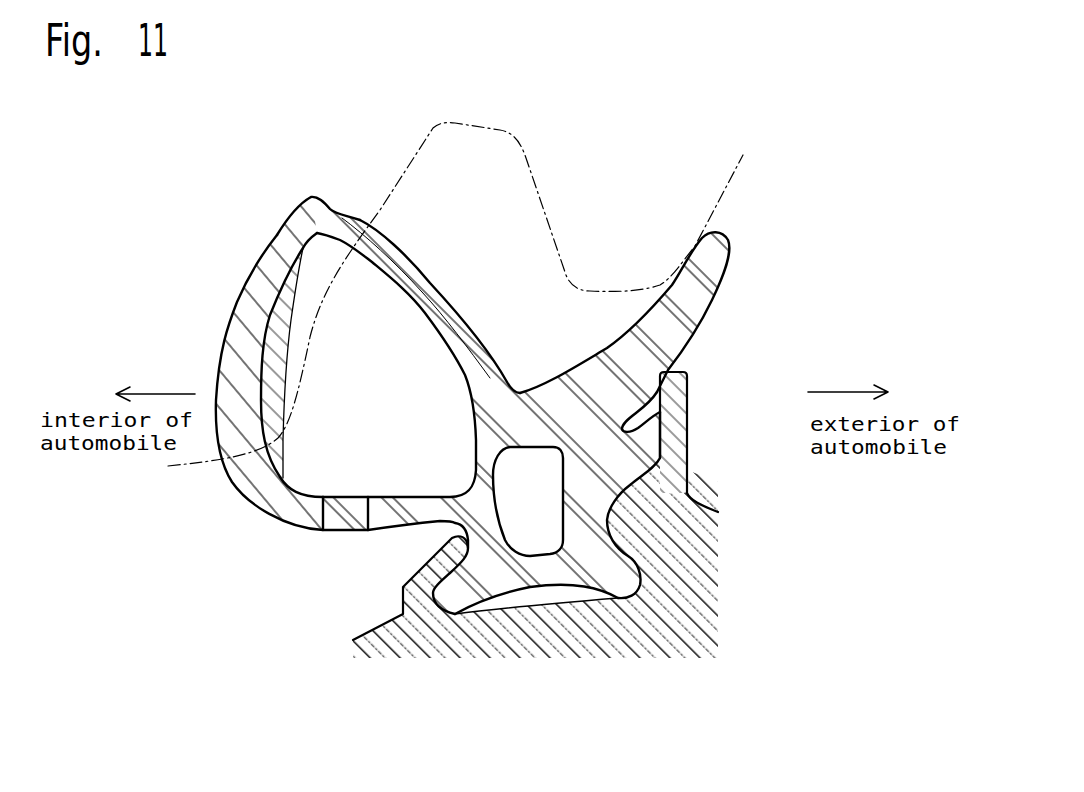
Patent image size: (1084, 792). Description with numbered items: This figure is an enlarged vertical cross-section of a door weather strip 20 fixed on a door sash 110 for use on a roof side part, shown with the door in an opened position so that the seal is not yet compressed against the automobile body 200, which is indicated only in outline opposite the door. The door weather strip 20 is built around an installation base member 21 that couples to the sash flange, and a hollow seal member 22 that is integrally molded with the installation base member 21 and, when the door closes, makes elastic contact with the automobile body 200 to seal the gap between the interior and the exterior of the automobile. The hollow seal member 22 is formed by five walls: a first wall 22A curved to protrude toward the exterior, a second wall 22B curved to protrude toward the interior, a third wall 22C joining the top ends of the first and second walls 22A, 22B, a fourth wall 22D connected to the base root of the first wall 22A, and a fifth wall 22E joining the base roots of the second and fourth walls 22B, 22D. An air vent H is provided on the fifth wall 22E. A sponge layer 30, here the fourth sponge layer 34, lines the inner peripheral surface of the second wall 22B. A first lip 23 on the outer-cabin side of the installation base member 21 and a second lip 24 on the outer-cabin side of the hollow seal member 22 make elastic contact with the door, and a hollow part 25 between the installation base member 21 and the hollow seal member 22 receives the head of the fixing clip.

The door weather strip 20 is at (483, 298).
The installation base member 21 is at (562, 573).
The hollow seal member 22 is at (351, 397).
The first wall 22A is at (412, 275).
The second wall 22B is at (236, 310).
The third wall 22C is at (312, 196).
The fourth wall 22D is at (493, 458).
The fifth wall 22E is at (403, 513).
The first lip 23 is at (642, 425).
The second lip 24 is at (712, 273).
The hollow part 25 is at (527, 530).
The sponge layer 30 is at (236, 326).
The fourth sponge layer 34 is at (268, 272).
The air vent H is at (337, 512).
The door sash 110 is at (630, 630).
The automobile body 200 is at (742, 158).